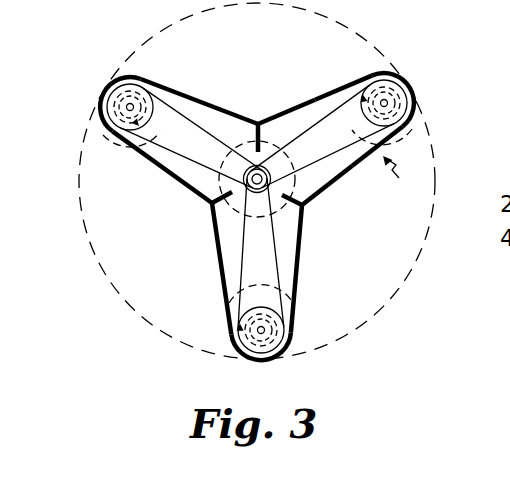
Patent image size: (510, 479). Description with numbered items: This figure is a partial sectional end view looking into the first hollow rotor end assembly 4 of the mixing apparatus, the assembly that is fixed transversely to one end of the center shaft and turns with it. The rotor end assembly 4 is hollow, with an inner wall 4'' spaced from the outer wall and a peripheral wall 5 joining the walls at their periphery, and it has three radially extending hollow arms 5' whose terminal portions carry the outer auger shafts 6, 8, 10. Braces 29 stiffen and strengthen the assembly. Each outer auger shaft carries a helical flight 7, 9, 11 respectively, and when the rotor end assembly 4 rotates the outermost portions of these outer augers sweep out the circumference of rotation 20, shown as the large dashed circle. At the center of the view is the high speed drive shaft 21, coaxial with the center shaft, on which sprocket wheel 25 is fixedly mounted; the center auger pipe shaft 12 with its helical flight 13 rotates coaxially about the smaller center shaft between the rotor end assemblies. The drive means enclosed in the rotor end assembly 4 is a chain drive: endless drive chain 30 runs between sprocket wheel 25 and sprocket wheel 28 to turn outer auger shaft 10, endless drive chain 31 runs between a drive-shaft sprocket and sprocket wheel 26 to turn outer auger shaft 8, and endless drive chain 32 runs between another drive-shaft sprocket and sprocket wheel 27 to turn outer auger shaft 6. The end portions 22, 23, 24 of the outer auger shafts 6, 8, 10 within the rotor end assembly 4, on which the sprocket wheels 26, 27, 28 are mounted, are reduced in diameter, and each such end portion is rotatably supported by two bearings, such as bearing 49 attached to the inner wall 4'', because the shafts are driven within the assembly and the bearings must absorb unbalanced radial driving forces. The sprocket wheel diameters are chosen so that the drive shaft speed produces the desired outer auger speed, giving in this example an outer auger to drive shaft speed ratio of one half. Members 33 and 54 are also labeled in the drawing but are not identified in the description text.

The first rotor end assembly 4 is at (397, 174).
The inner wall 4'' is at (341, 196).
The peripheral wall 5 is at (377, 166).
The hollow arms 5' is at (343, 72).
The outer auger shaft 6 is at (113, 93).
The helical flight 7 is at (170, 99).
The outer auger shaft 8 is at (415, 98).
The helical flight 9 is at (364, 114).
The outer auger shaft 10 is at (270, 312).
The helical flight 11 is at (225, 282).
The center auger pipe shaft 12 is at (172, 124).
The helical flight 13 is at (292, 158).
The circumference of rotation 20 is at (305, 6).
The high speed drive shaft 21 is at (234, 193).
The end portion of outer auger shaft 22 is at (387, 102).
The end portion of outer auger shaft 23 is at (136, 103).
The end portion of outer auger shaft 24 is at (265, 330).
The sprocket wheel 25 is at (261, 225).
The sprocket wheel 26 is at (399, 79).
The sprocket wheel 27 is at (133, 78).
The sprocket wheel 28 is at (266, 352).
The braces 29 is at (260, 122).
The endless drive chain 30 is at (296, 265).
The endless drive chain 31 is at (300, 131).
The endless drive chain 32 is at (208, 120).
The frame side member 33 is at (170, 175).
The bearing 49 is at (117, 106).
The frame member 54 is at (331, 95).